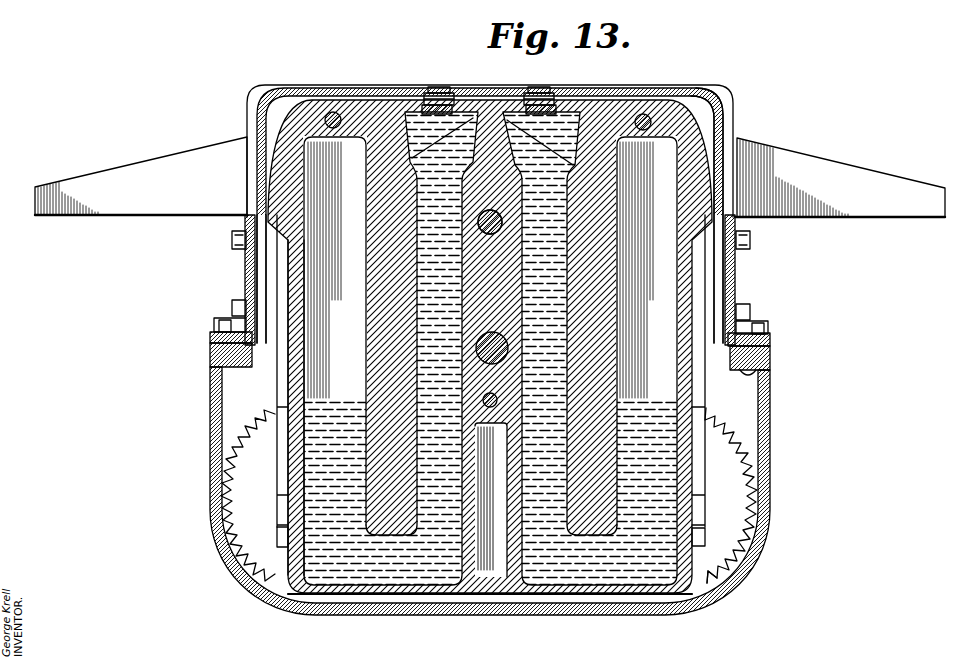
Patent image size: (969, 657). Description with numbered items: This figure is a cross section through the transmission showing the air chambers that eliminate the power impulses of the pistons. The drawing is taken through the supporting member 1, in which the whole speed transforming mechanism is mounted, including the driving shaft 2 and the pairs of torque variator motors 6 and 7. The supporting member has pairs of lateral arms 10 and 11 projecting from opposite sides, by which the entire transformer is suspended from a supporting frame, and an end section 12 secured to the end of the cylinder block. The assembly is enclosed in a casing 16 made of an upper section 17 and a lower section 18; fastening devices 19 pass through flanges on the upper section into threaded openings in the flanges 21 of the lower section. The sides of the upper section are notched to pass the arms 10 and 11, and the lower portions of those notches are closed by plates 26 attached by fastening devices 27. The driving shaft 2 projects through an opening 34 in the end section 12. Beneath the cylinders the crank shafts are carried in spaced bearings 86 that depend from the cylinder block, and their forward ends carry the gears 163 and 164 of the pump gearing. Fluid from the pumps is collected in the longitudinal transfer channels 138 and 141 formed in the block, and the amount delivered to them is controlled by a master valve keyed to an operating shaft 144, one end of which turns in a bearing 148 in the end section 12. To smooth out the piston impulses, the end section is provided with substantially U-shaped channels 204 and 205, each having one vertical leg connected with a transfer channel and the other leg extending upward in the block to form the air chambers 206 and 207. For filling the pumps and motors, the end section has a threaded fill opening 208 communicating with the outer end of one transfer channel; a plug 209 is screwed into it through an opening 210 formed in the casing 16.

The supporting member 1 is at (465, 100).
The driving shaft 2 is at (478, 357).
The torque variator motor 6 is at (705, 395).
The torque variator motor 7 is at (277, 400).
The lateral arm 10 is at (834, 150).
The lateral arm 11 is at (150, 160).
The end section 12 is at (288, 378).
The casing 16 is at (210, 338).
The upper section 17 is at (355, 92).
The lower section 18 is at (517, 615).
The fastening device 19 is at (225, 318).
The flange 21 is at (777, 360).
The plate 26 is at (262, 272).
The fastening device 27 is at (750, 248).
The opening 34 is at (477, 342).
The bearing 86 is at (280, 468).
The transfer channel 138 is at (580, 100).
The transfer channel 141 is at (415, 115).
The operating shaft 144 is at (478, 226).
The bearing 148 is at (484, 216).
The gear 163 is at (725, 533).
The gear 164 is at (245, 535).
The U-shaped channel 204 is at (548, 227).
The U-shaped channel 205 is at (425, 200).
The air chamber 206 is at (722, 142).
The air chamber 207 is at (318, 148).
The fill opening 208 is at (528, 92).
The plug 209 is at (545, 88).
The opening 210 is at (550, 94).